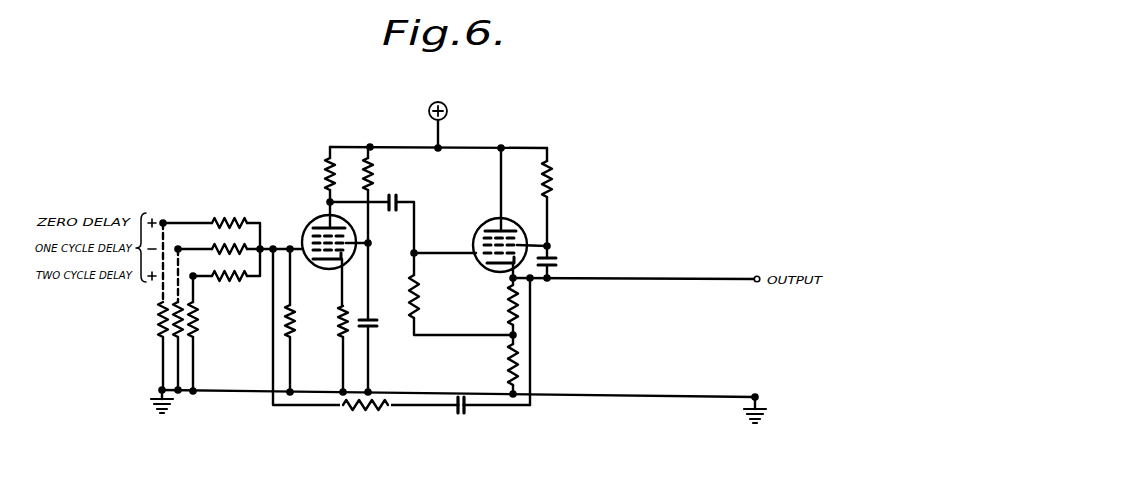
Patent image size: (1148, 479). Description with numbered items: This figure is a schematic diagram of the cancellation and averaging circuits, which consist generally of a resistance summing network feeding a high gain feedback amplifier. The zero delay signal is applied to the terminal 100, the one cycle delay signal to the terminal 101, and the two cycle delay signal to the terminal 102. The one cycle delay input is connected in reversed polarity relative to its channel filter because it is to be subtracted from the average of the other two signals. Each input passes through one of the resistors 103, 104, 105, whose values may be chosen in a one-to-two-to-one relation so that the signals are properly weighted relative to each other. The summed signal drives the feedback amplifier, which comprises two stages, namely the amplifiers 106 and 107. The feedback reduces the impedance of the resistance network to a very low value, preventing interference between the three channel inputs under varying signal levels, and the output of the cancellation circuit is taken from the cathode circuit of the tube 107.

The terminal 100 is at (164, 222).
The terminal 101 is at (179, 249).
The terminal 102 is at (194, 276).
The resistor 103 is at (229, 222).
The resistor 104 is at (246, 248).
The resistor 105 is at (229, 277).
The amplifier 106 is at (306, 229).
The amplifier 107 is at (480, 229).